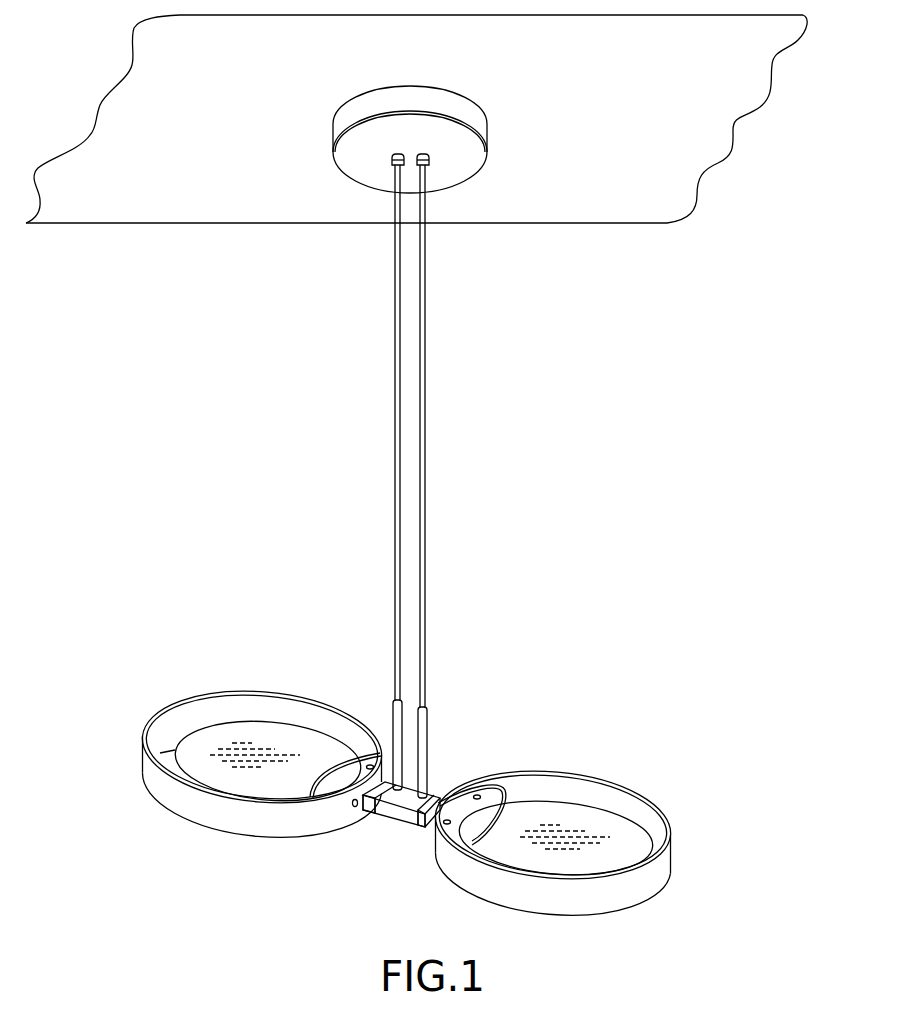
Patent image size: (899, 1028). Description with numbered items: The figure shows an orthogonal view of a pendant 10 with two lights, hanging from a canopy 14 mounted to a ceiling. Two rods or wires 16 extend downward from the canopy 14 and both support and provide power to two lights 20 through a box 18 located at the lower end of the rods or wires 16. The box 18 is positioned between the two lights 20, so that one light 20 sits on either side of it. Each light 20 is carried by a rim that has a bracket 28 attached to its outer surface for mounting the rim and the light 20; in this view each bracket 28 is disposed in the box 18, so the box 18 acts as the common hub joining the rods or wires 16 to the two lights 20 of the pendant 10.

The pendant 10 is at (297, 460).
The canopy 14 is at (477, 117).
The rods or wires 16 is at (397, 267).
The box 18 is at (400, 813).
The lights 20 is at (217, 695).
The bracket 28 is at (370, 813).